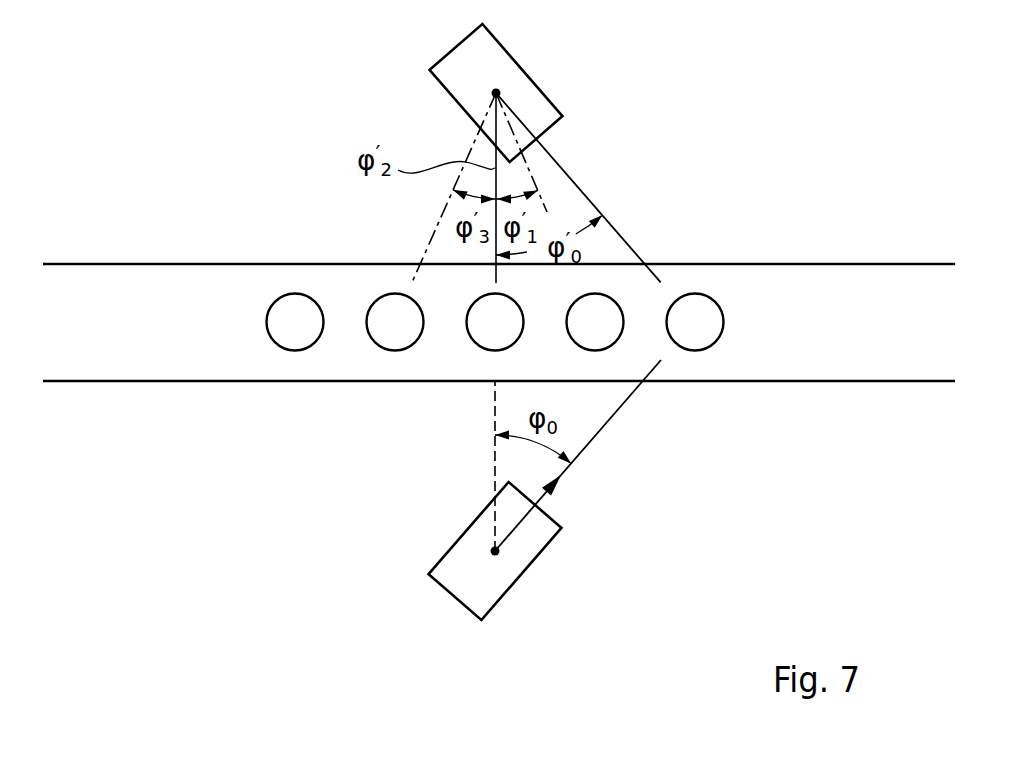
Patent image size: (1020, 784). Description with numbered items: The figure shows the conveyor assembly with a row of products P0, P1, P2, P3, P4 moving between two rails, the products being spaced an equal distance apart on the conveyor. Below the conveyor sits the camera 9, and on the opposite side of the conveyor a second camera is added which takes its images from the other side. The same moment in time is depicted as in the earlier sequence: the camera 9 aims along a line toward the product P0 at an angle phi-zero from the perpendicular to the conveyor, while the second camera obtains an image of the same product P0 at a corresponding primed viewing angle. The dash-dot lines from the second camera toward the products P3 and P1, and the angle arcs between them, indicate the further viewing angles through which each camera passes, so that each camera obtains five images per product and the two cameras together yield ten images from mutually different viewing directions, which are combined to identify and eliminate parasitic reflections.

The camera 9 is at (526, 566).
The product P0 is at (706, 334).
The product P1 is at (606, 334).
The product P2 is at (506, 334).
The product P3 is at (406, 334).
The product P4 is at (306, 334).